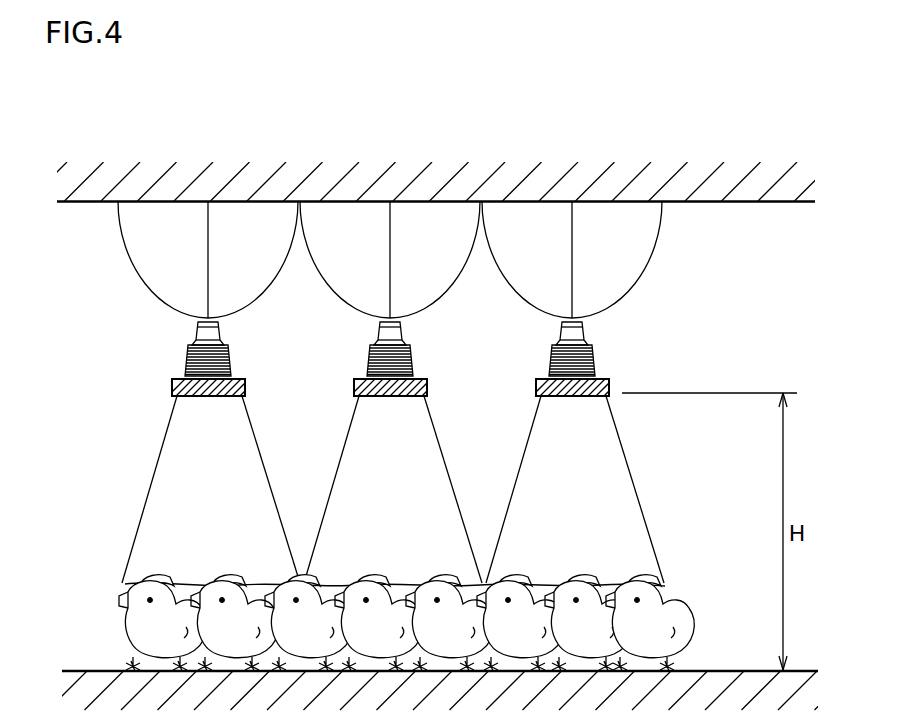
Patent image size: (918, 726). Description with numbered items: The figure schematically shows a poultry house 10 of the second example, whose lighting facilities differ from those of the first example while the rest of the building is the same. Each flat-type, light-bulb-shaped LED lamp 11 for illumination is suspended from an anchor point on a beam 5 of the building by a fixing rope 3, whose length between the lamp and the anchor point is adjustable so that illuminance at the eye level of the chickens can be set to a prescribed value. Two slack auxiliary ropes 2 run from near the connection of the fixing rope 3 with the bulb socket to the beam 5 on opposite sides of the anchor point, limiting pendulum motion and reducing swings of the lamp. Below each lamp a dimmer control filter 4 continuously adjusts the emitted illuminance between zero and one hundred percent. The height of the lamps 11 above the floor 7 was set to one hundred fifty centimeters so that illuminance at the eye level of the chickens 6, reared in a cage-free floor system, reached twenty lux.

The poultry house 10 is at (411, 322).
The auxiliary rope 2 is at (650, 270).
The fixing rope 3 is at (391, 225).
The flat-type, light-bulb-shaped LED lamp for illumination 11 is at (596, 362).
The dimmer control filter 4 is at (177, 389).
The beam 5 is at (772, 203).
The chicken 6 is at (124, 628).
The floor 7 is at (735, 668).